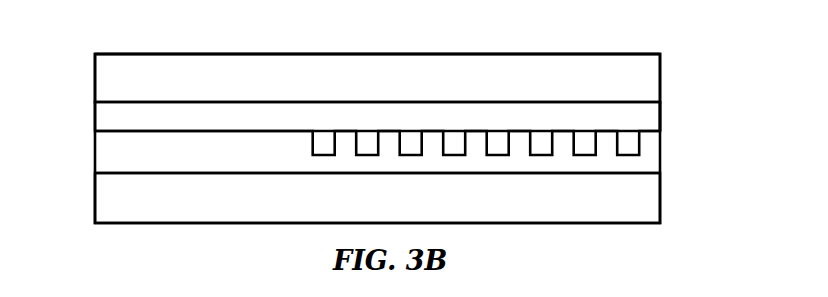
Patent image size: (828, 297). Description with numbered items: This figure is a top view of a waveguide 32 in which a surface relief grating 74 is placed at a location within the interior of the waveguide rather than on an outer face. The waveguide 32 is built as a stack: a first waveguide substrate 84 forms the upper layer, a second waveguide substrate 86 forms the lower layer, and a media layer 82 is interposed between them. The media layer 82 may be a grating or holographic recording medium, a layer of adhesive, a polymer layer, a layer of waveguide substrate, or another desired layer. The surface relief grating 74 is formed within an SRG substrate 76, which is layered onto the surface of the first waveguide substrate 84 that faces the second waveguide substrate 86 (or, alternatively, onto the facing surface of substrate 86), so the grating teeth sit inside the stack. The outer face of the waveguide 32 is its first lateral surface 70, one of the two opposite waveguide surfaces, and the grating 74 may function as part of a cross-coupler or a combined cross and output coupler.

The waveguide 32 is at (731, 55).
The first lateral surface 70 is at (368, 52).
The surface relief grating 74 is at (668, 120).
The SRG substrate 76 is at (98, 118).
The media layer 82 is at (98, 150).
The first waveguide substrate 84 is at (141, 63).
The second waveguide substrate 86 is at (650, 200).